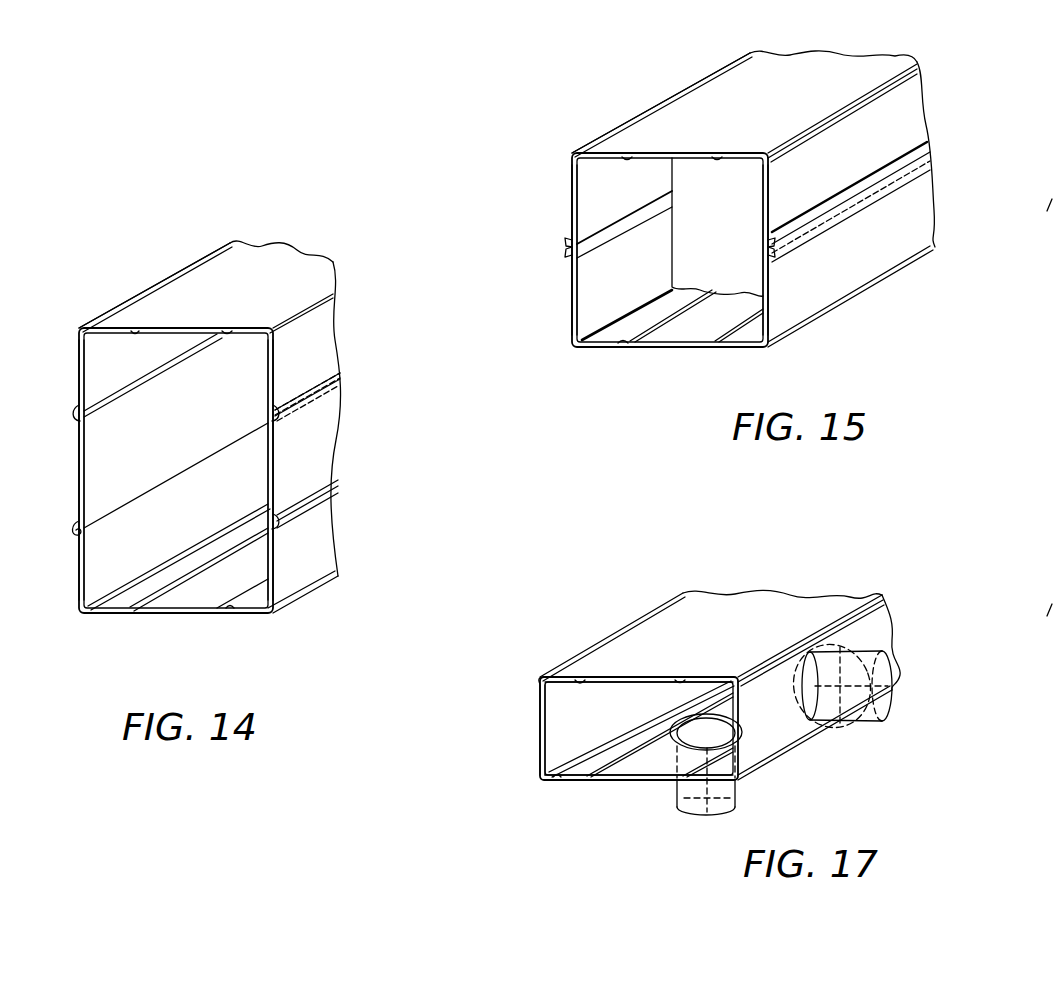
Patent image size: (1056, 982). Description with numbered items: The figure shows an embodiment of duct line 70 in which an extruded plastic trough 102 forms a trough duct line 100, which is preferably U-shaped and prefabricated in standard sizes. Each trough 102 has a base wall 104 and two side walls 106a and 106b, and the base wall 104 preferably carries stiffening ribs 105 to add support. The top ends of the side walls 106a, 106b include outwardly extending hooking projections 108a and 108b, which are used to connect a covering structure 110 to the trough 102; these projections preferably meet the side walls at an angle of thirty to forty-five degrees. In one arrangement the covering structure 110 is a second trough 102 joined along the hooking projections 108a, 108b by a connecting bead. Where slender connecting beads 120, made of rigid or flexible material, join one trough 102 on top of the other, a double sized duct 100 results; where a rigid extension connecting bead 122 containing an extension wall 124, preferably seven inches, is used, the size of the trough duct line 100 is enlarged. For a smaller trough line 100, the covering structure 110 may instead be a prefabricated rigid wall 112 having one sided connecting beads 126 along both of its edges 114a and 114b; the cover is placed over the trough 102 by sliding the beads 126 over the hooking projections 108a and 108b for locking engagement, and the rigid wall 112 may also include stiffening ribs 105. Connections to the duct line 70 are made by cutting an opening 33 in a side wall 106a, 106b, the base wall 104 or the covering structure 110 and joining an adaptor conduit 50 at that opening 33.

In FIG. 17, the opening 33 is at (895, 642).
In FIG. 17, the adaptor conduit 50 is at (867, 690).
In FIG. 14, the duct line 70 is at (147, 298).
In FIG. 15, the duct line 70 is at (685, 108).
In FIG. 17, the duct line 70 is at (828, 608).
In FIG. 14, the trough duct line 100 is at (100, 377).
In FIG. 15, the trough duct line 100 is at (920, 90).
In FIG. 17, the trough duct line 100 is at (558, 758).
In FIG. 14, the trough 102 is at (220, 299).
In FIG. 15, the trough 102 is at (775, 106).
In FIG. 17, the trough 102 is at (598, 770).
In FIG. 14, the base wall 104 is at (253, 252).
In FIG. 15, the base wall 104 is at (797, 63).
In FIG. 17, the base wall 104 is at (643, 768).
In FIG. 14, the stiffening ribs 105 is at (224, 333).
In FIG. 15, the stiffening ribs 105 is at (627, 157).
In FIG. 17, the stiffening ribs 105 is at (580, 678).
In FIG. 14, the side wall 106a is at (102, 352).
In FIG. 15, the side wall 106a is at (592, 187).
In FIG. 17, the side wall 106a is at (765, 748).
In FIG. 14, the side wall 106b is at (320, 357).
In FIG. 15, the side wall 106b is at (917, 118).
In FIG. 17, the side wall 106b is at (552, 727).
In FIG. 14, the hooking projection 108a is at (273, 522).
In FIG. 14, the hooking projection 108b is at (75, 533).
In FIG. 14, the covering structure 110 is at (310, 262).
In FIG. 15, the covering structure 110 is at (890, 63).
In FIG. 17, the covering structure 110 is at (772, 602).
In FIG. 17, the rigid wall 112 is at (717, 598).
In FIG. 17, the edge of rigid wall 114a is at (630, 623).
In FIG. 17, the edge of rigid wall 114b is at (885, 595).
In FIG. 15, the slender connecting bead 120 is at (563, 252).
In FIG. 14, the extension connecting bead 122 is at (320, 412).
In FIG. 14, the extension wall 124 is at (325, 463).
In FIG. 17, the extension wall 124 is at (743, 687).
In FIG. 17, the one sided connecting bead 126 is at (537, 683).